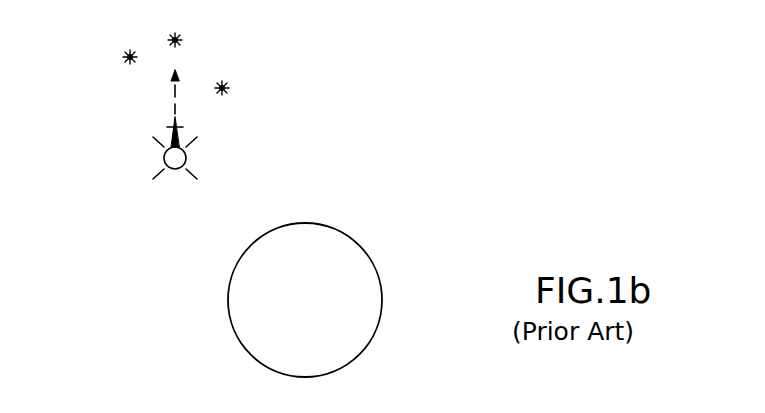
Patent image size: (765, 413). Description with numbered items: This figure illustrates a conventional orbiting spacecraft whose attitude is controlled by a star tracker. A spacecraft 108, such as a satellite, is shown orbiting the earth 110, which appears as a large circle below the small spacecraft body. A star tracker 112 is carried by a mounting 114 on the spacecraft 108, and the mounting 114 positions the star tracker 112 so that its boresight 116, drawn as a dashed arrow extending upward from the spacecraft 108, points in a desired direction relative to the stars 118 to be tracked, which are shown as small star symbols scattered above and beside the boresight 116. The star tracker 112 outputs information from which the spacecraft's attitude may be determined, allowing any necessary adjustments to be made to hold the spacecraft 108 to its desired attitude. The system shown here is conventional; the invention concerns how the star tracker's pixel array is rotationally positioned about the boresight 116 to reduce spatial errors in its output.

The spacecraft 108 is at (174, 170).
The earth 110 is at (378, 272).
The star tracker 112 is at (182, 130).
The mounting 114 is at (168, 143).
The boresight 116 is at (177, 104).
The stars 118 is at (126, 53).